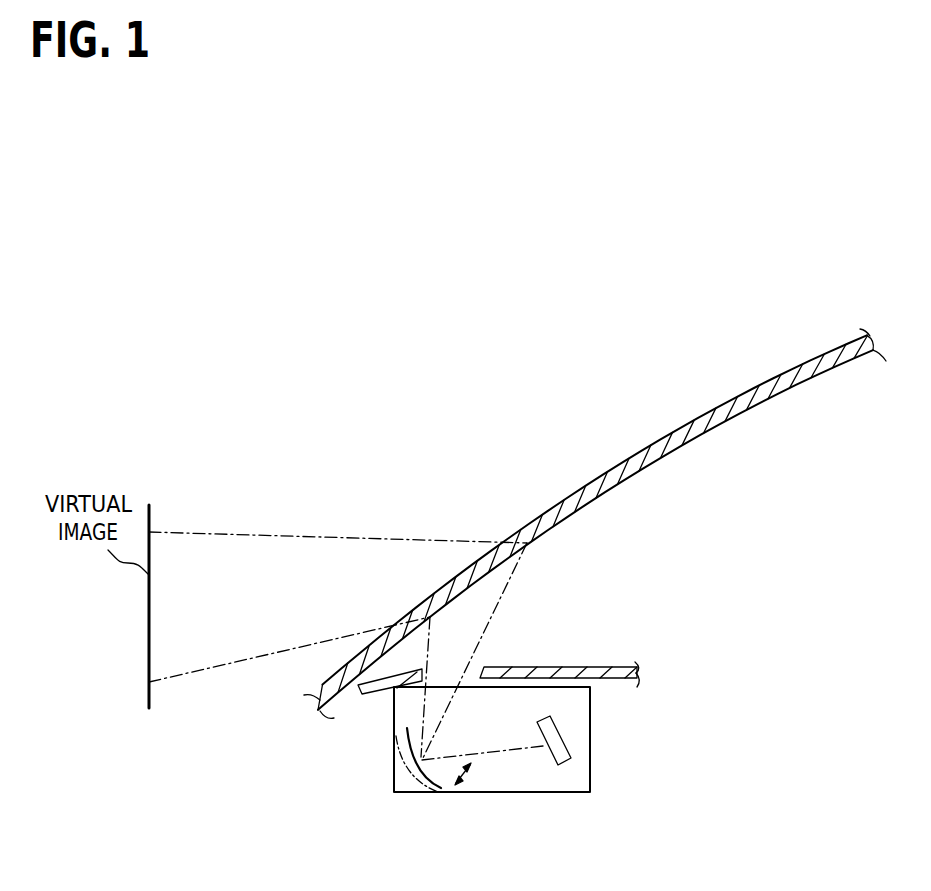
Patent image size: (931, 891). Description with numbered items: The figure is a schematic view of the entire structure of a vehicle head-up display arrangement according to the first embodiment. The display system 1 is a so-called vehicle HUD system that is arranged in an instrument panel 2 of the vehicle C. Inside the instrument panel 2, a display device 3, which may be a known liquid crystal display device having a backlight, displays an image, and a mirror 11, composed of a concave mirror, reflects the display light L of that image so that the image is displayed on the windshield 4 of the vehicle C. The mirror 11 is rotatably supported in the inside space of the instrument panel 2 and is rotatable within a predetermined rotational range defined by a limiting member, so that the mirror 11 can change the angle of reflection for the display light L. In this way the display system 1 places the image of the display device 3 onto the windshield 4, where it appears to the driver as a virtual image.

The display system 1 is at (562, 803).
The instrument panel 2 is at (551, 667).
The display device 3 is at (566, 736).
The windshield 4 is at (563, 508).
The mirror 11 is at (445, 773).
The display light L is at (493, 750).
The vehicle C is at (818, 287).